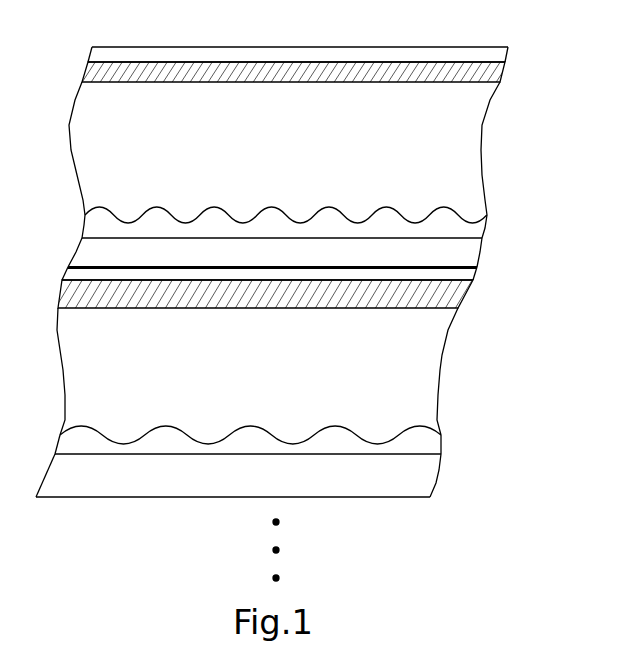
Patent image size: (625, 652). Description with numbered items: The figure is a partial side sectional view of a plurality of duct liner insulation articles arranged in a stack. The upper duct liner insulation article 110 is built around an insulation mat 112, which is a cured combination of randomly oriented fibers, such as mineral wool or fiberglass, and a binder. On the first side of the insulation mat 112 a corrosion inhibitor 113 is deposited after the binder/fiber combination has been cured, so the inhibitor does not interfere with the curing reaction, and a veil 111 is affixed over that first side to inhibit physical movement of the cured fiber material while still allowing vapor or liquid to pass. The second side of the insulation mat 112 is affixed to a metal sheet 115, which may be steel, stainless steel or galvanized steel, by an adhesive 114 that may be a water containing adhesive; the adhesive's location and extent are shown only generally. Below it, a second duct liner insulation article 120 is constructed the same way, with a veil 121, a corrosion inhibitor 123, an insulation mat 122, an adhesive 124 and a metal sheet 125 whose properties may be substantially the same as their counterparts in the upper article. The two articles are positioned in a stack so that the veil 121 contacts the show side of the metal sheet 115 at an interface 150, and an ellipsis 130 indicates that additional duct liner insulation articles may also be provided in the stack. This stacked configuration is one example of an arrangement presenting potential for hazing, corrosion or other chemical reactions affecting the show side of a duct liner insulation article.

The duct liner insulation article 110 is at (307, 135).
The veil 111 is at (509, 48).
The insulation mat 112 is at (481, 143).
The corrosion inhibitor 113 is at (503, 72).
The adhesive 114 is at (487, 220).
The metal sheet 115 is at (482, 246).
The duct liner insulation article 120 is at (280, 365).
The veil 121 is at (478, 270).
The insulation mat 122 is at (440, 368).
The corrosion inhibitor 123 is at (465, 297).
The adhesive 124 is at (441, 442).
The metal sheet 125 is at (436, 482).
The ellipsis 130 is at (267, 510).
The interface 150 is at (84, 268).